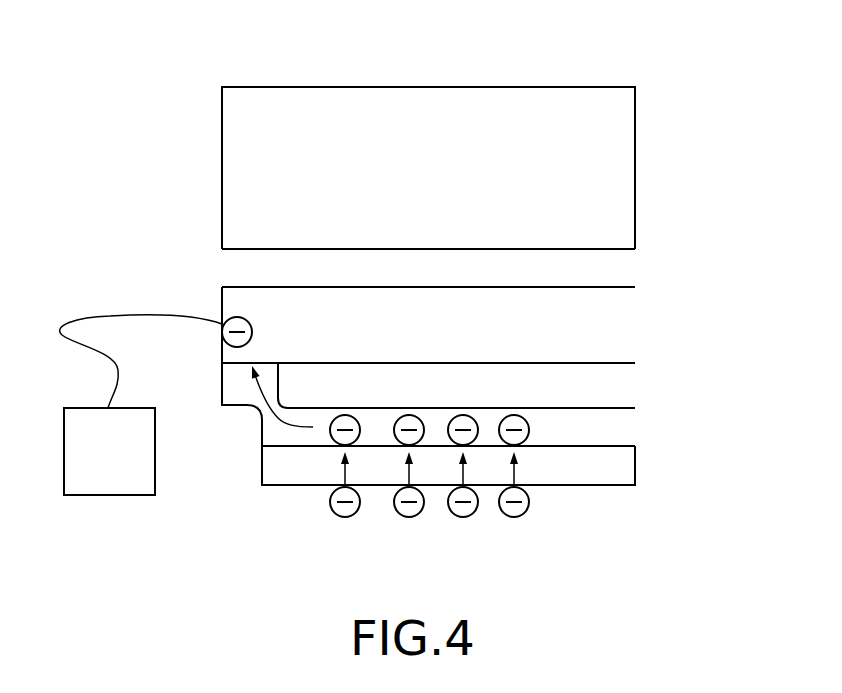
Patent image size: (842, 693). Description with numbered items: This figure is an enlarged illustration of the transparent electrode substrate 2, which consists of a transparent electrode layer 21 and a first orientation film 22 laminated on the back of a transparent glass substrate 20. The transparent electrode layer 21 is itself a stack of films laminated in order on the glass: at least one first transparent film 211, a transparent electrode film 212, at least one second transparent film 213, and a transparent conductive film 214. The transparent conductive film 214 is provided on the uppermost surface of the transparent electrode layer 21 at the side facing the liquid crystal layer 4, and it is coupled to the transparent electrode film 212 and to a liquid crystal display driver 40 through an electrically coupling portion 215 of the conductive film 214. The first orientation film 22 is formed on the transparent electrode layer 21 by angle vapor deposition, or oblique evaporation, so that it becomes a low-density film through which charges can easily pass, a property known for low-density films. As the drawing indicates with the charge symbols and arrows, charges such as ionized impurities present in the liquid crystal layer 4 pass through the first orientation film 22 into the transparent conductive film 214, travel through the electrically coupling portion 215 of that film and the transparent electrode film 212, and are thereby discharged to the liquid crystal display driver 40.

The transparent electrode substrate 2 is at (133, 71).
The transparent glass substrate 20 is at (620, 163).
The transparent electrode layer 21 is at (757, 233).
The first transparent film 211 is at (620, 272).
The transparent electrode film 212 is at (620, 333).
The second transparent film 213 is at (620, 395).
The transparent conductive film 214 is at (620, 437).
The electrically coupling portion 215 is at (253, 390).
The first orientation film 22 is at (620, 465).
The liquid crystal layer 4 is at (568, 520).
The liquid crystal display driver 40 is at (115, 482).